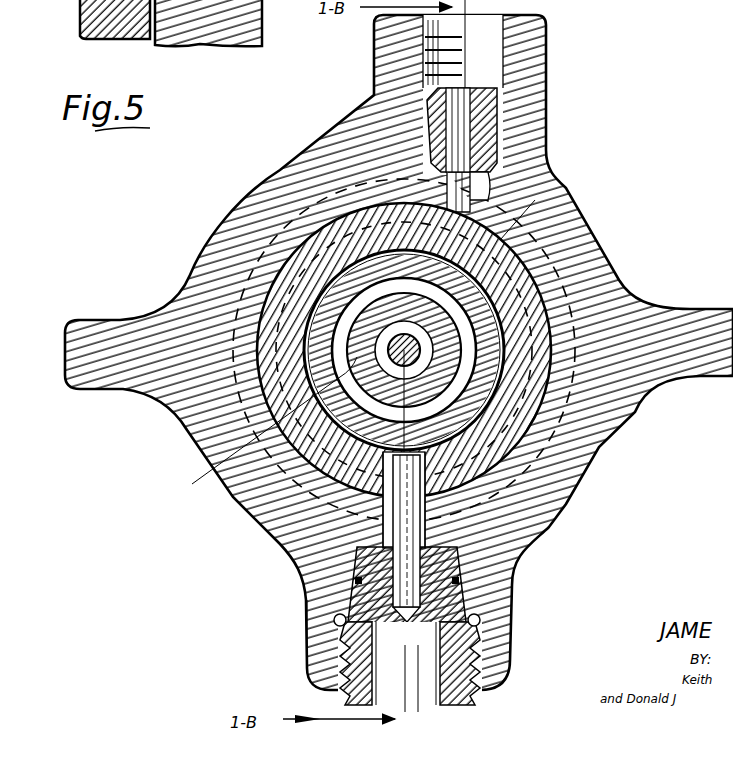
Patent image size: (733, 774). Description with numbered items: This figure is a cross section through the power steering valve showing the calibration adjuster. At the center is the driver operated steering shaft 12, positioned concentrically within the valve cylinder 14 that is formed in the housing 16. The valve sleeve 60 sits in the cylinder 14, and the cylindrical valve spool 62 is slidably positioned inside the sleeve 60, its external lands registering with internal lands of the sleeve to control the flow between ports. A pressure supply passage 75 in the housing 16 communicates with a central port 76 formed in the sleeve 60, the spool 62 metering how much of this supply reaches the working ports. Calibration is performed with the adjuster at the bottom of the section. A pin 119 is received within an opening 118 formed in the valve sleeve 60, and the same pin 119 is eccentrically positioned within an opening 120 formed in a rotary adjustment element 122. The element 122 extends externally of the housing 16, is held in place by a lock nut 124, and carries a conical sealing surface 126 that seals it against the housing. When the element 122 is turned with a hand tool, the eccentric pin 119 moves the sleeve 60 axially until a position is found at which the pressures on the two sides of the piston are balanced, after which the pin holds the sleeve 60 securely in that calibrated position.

The steering shaft 12 is at (203, 457).
The valve cylinder 14 is at (599, 455).
The housing 16 is at (580, 494).
The valve sleeve 60 is at (598, 242).
The valve spool 62 is at (616, 424).
The pressure supply passage 75 is at (527, 177).
The central port 76 is at (499, 231).
The opening 118 is at (238, 502).
The pin 119 is at (280, 540).
The opening 120 is at (300, 582).
The rotary adjustment element 122 is at (315, 660).
The lock nut 124 is at (317, 645).
The conical sealing surface 126 is at (476, 560).